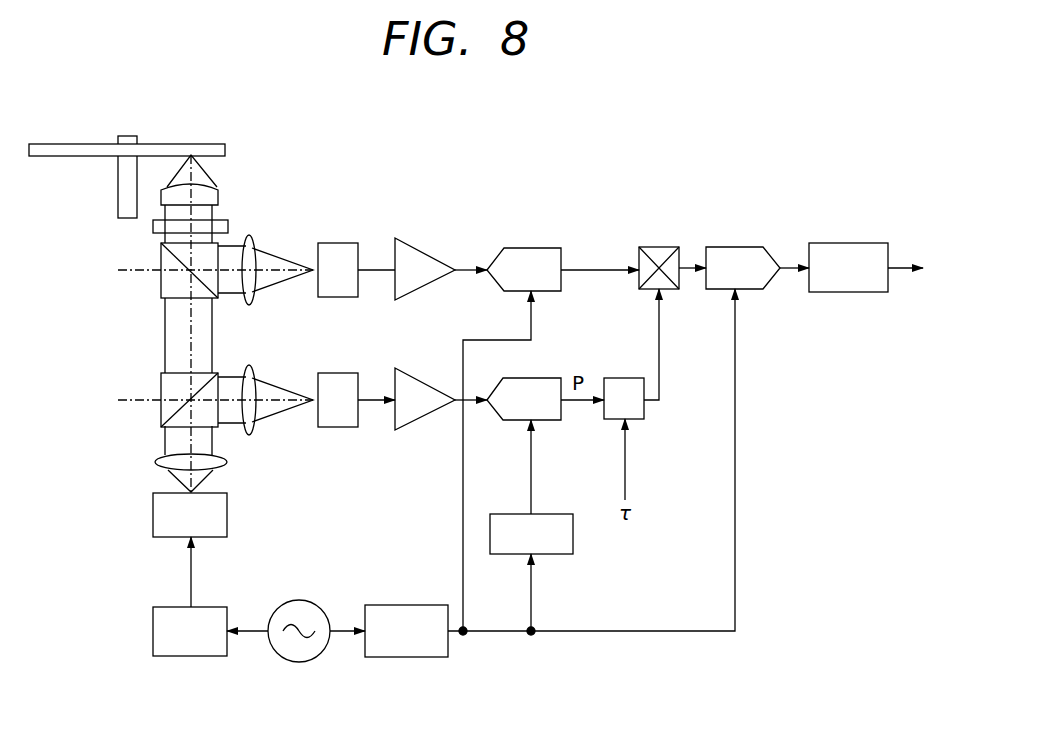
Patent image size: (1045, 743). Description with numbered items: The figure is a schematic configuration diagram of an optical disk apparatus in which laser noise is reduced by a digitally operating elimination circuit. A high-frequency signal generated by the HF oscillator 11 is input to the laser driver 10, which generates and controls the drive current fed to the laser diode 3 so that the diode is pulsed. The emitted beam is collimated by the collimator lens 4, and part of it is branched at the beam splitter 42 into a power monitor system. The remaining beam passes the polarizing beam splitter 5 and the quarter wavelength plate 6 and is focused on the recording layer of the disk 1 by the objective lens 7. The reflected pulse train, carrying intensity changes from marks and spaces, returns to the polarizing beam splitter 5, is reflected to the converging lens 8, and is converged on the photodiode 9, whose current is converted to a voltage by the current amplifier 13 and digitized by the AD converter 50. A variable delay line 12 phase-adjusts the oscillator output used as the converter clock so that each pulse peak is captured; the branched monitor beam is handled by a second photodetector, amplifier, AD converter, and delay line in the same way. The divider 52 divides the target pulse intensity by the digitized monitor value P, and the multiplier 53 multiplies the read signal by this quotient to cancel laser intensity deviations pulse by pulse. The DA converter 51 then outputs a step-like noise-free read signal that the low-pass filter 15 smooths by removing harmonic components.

The disk 1 is at (73, 147).
The objective lens 7 is at (218, 188).
The quarter wavelength plate 6 is at (212, 226).
The polarizing beam splitter 5 is at (170, 284).
The beam splitter 42 is at (170, 408).
The converging lens 8 is at (253, 293).
The photodiode 9 is at (340, 243).
The current amplifier 13 is at (420, 250).
The AD converter 50 is at (540, 248).
The multiplier 53 is at (660, 247).
The DA converter 51 is at (748, 247).
The low-pass filter 15 is at (858, 243).
The divider 52 is at (645, 410).
The variable delay line 12 is at (573, 545).
The collimator lens 4 is at (160, 462).
The laser diode 3 is at (163, 510).
The laser driver 10 is at (163, 628).
The HF oscillator 11 is at (318, 657).